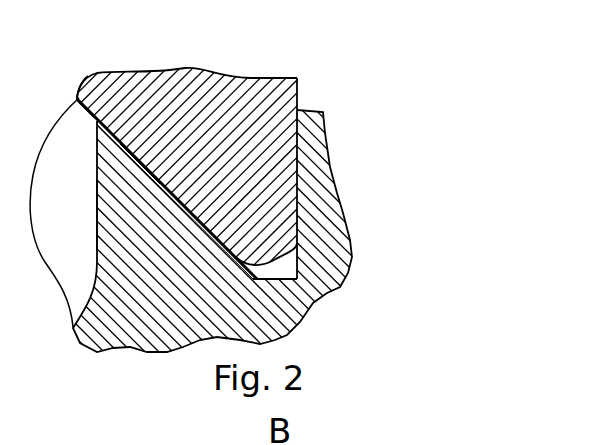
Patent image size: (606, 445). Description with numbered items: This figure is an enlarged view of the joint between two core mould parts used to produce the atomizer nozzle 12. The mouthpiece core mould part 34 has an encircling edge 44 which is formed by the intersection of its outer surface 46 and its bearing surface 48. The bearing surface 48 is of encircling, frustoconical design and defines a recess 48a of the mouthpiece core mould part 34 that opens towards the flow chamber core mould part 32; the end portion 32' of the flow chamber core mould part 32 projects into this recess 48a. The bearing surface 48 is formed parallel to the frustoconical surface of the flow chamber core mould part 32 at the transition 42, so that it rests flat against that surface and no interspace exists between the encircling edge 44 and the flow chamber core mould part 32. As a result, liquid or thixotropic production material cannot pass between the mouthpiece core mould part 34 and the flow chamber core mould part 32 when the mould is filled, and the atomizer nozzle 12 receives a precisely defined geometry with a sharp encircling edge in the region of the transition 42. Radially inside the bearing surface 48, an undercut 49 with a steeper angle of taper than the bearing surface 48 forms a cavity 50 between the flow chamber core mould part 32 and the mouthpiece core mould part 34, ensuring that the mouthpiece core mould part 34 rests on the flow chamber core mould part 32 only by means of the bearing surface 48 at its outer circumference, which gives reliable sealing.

The atomizer nozzle 12 is at (80, 108).
The flow chamber core mould part 32 is at (254, 164).
The end portion of the flow chamber core mould part 32' is at (283, 154).
The mouthpiece core mould part 34 is at (290, 334).
The transition 42 is at (68, 125).
The encircling edge 44 is at (78, 101).
The outer surface 46 is at (94, 206).
The bearing surface 48 is at (110, 134).
The recess 48a is at (187, 195).
The undercut 49 is at (142, 169).
The cavity 50 is at (213, 225).